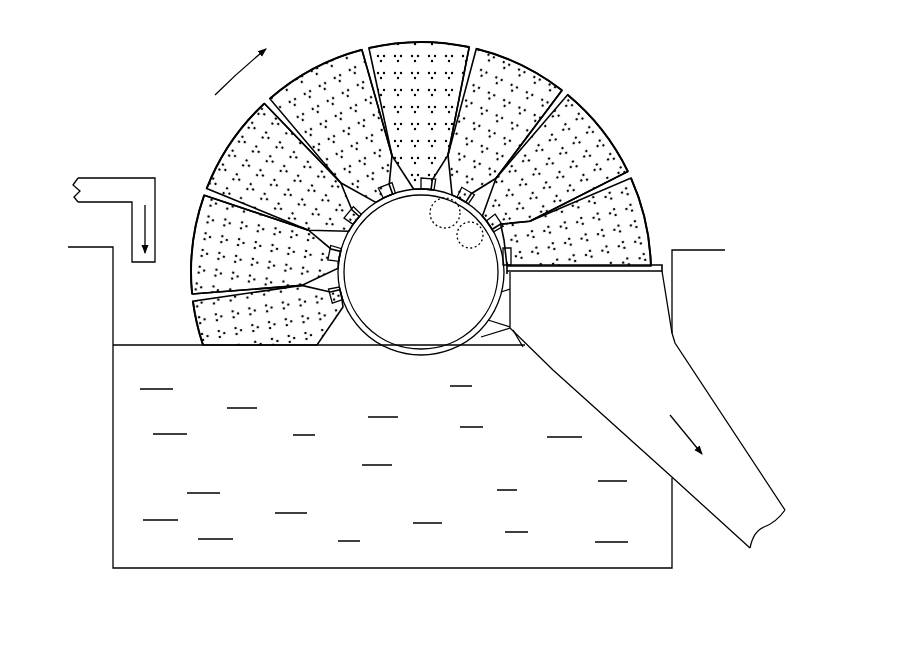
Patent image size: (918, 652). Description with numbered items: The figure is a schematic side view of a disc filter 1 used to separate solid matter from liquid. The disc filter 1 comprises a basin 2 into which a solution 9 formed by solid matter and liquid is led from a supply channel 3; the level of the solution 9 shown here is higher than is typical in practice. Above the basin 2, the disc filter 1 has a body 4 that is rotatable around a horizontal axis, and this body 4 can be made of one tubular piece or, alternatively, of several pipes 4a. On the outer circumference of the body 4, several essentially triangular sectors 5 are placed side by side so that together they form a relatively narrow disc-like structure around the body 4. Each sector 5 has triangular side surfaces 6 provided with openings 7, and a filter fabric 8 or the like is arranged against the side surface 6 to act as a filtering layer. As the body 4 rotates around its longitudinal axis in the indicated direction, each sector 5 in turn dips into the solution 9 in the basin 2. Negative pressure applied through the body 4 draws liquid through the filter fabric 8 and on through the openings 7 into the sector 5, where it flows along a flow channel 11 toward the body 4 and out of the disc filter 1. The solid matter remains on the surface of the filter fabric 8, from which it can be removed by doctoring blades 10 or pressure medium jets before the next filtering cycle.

The disc filter 1 is at (722, 130).
The basin 2 is at (110, 466).
The supply channel 3 is at (112, 186).
The body 4 is at (411, 258).
The pipes 4a is at (475, 257).
The sectors 5 is at (417, 173).
The side surfaces 6 is at (345, 132).
The openings 7 is at (515, 72).
The filter fabric 8 is at (395, 58).
The solution 9 is at (454, 492).
The doctoring blades 10 is at (625, 263).
The flow channel 11 is at (633, 360).